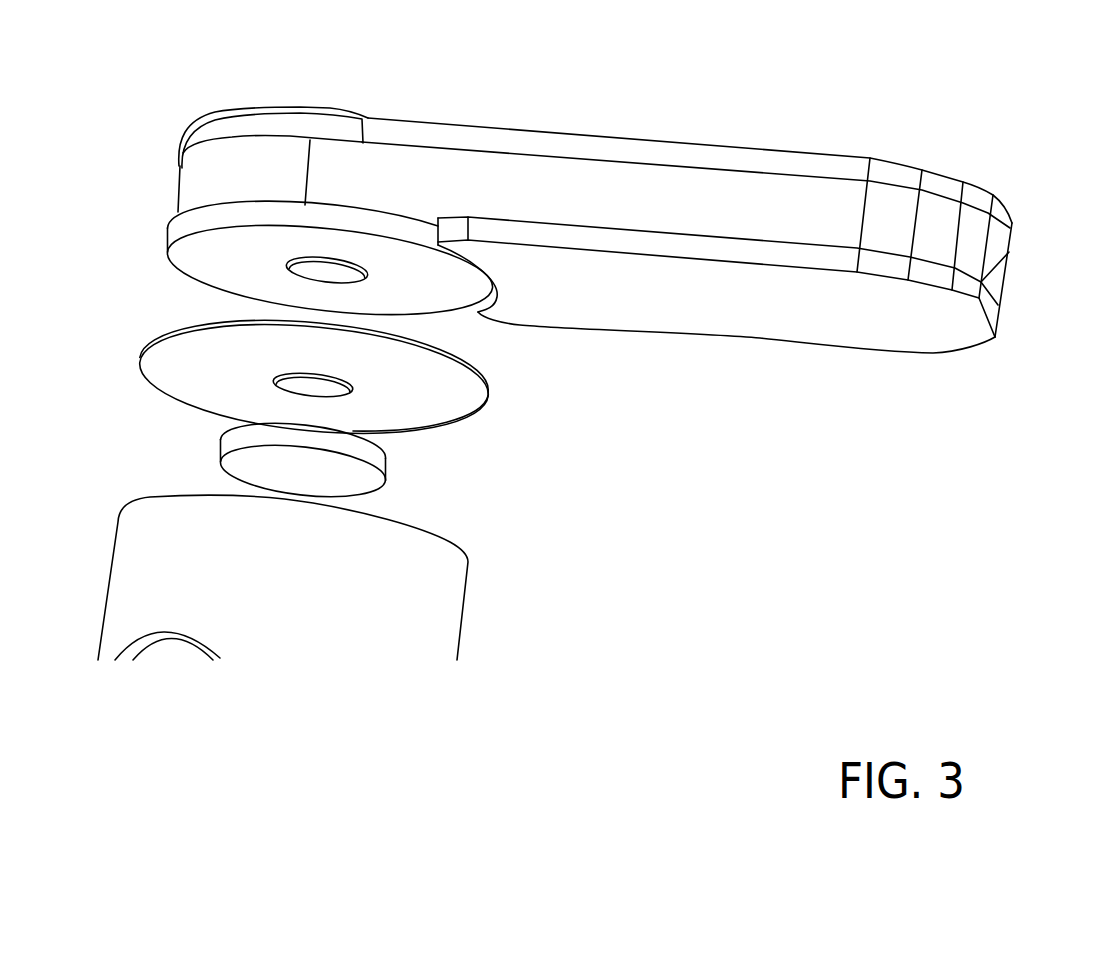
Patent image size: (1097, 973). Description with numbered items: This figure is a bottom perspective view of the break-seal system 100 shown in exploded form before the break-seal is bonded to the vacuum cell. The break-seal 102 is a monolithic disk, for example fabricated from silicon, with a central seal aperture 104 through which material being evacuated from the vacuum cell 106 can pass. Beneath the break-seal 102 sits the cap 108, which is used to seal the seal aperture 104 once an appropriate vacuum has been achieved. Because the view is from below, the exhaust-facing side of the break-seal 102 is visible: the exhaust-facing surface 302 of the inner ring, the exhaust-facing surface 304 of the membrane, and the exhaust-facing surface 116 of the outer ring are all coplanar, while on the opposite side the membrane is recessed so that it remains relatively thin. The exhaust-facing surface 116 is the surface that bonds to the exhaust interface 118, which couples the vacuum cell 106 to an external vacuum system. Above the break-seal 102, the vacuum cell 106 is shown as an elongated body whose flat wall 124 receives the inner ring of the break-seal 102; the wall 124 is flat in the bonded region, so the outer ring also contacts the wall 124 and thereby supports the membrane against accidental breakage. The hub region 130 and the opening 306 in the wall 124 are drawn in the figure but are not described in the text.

The break-seal system 100 is at (541, 34).
The break-seal 102 is at (259, 384).
The seal aperture 104 is at (310, 388).
The vacuum cell 106 is at (648, 207).
The cap 108 is at (386, 483).
The exhaust-facing surface 116 is at (445, 408).
The exhaust interface 118 is at (354, 596).
The wall 124 is at (254, 263).
The hub 130 is at (266, 176).
The exhaust-facing surface 302 is at (340, 370).
The exhaust-facing surface 304 is at (393, 388).
The aperture 306 is at (320, 271).